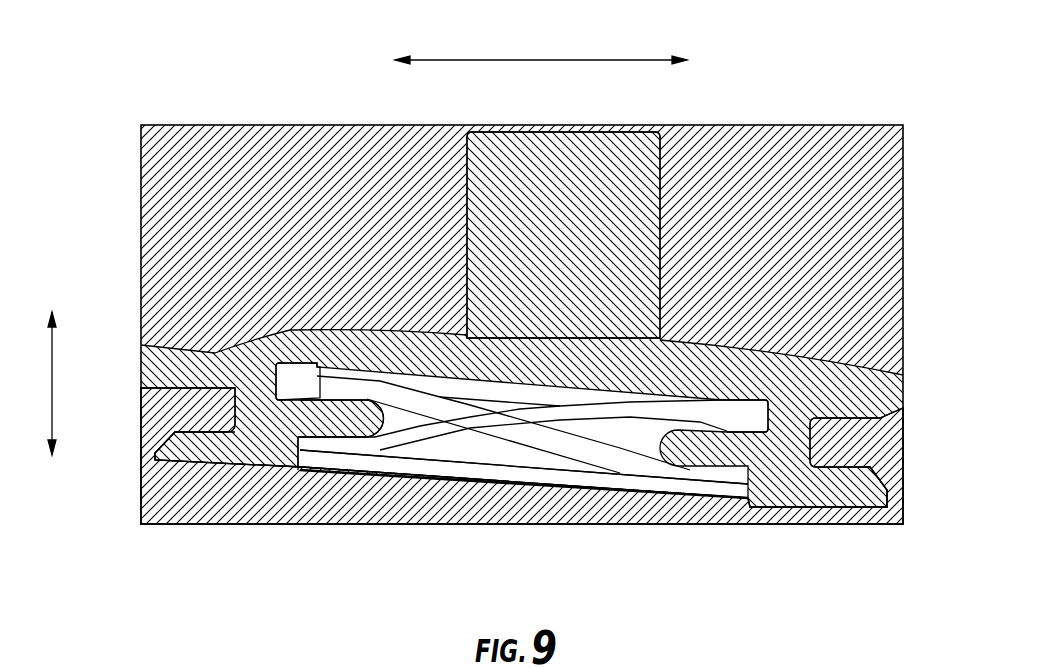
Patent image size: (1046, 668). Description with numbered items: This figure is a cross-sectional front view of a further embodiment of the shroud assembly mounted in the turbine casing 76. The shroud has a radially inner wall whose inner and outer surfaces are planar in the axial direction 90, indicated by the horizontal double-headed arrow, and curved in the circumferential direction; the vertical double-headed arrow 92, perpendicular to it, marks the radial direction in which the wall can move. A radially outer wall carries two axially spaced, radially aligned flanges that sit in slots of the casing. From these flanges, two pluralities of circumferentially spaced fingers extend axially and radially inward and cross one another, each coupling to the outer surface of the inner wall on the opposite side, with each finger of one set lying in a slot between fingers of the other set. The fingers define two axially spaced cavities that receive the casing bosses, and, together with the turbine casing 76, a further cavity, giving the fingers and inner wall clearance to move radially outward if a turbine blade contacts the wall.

The turbine casing 76 is at (333, 340).
The axial direction 90 is at (653, 58).
The vertical direction 92 is at (52, 371).